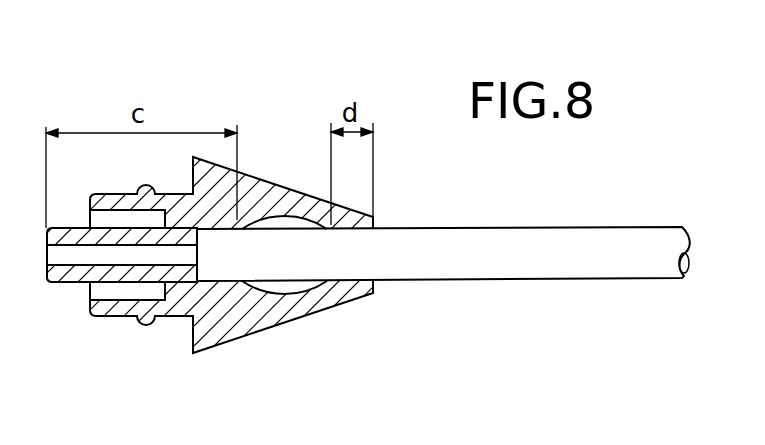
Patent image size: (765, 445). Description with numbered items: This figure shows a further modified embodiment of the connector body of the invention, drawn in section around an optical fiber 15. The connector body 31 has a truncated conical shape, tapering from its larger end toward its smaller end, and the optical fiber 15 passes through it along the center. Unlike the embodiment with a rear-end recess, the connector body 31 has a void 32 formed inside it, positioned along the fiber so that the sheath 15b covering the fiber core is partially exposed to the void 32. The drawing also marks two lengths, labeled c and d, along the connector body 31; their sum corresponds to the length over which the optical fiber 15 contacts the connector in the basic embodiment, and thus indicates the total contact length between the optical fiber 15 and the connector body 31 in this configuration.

The optical fiber 15 is at (525, 238).
The sheath 15b is at (283, 243).
The connector body 31 is at (243, 322).
The void 32 is at (303, 285).